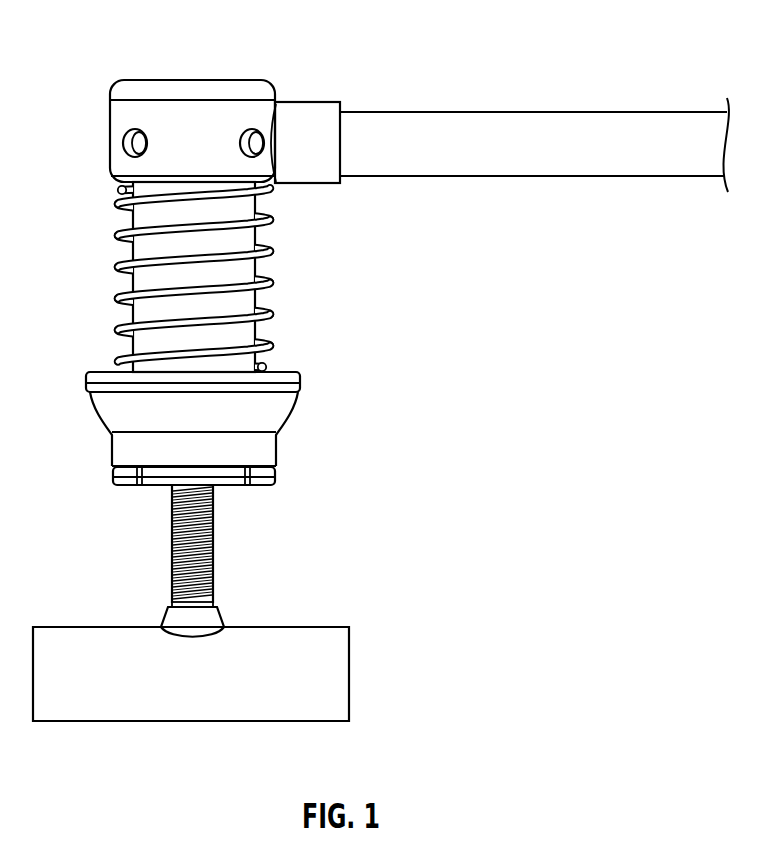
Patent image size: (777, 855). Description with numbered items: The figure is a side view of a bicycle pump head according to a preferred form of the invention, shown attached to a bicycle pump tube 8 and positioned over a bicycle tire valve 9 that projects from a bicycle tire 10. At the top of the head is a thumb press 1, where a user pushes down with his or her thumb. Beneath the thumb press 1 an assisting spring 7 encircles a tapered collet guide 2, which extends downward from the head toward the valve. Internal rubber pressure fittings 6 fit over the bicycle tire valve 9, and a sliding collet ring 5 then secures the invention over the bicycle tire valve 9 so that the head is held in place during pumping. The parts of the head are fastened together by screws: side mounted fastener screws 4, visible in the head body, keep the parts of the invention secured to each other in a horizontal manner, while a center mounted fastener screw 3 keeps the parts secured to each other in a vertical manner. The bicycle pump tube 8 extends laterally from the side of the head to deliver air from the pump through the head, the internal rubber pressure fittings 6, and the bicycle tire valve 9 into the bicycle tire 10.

The thumb press 1 is at (147, 79).
The tapered collet guide 2 is at (140, 280).
The center mounted fastener screw 3 is at (194, 79).
The side mounted fastener screws 4 is at (124, 143).
The sliding collet ring 5 is at (264, 413).
The internal rubber pressure fitting 6 is at (277, 477).
The assisting spring 7 is at (270, 252).
The bicycle pump tube 8 is at (603, 111).
The bicycle tire valve 9 is at (213, 527).
The bicycle tire 10 is at (349, 645).